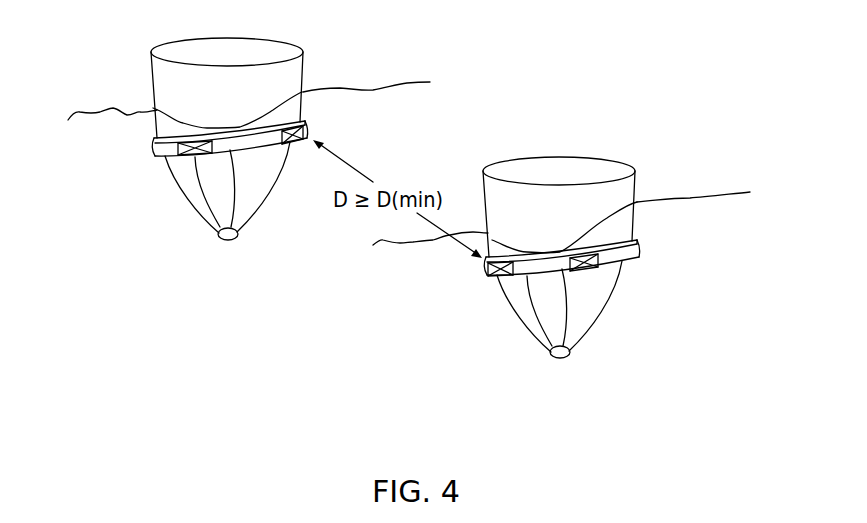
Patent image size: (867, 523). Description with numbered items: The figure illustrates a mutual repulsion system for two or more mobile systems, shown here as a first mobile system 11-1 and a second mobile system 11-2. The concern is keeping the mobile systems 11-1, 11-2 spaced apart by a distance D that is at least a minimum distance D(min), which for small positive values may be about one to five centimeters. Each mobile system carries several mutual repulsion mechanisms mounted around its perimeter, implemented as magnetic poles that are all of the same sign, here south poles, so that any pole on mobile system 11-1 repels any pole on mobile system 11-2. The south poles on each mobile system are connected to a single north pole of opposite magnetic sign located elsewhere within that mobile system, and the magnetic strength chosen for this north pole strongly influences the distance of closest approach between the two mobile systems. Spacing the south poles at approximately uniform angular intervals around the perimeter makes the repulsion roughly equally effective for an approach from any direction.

The mobile system 11-1 is at (118, 58).
The mobile system 11-2 is at (673, 154).